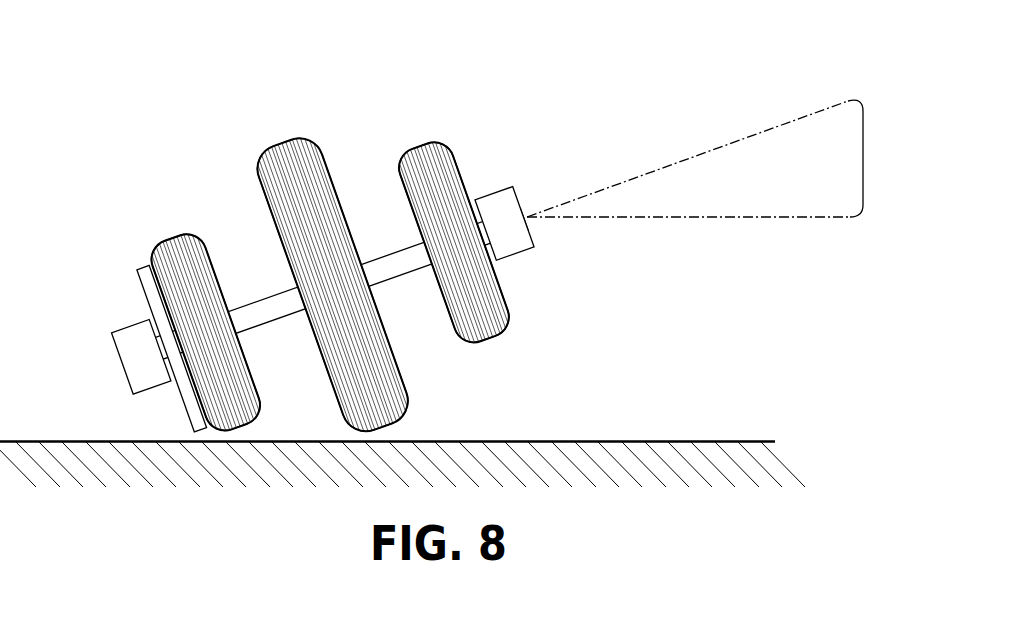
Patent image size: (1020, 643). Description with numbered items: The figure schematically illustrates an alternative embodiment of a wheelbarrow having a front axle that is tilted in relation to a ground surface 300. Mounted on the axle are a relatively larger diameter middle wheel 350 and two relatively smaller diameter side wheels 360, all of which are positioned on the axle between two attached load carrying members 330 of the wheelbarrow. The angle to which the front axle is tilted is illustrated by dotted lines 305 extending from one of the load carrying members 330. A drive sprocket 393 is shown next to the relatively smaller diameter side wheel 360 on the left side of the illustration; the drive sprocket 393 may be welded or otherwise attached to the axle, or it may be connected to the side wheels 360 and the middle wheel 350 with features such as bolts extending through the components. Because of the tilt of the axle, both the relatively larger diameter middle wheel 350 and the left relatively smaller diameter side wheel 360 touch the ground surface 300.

The ground surface 300 is at (638, 442).
The dotted lines 305 is at (865, 151).
The load carrying members 330 is at (121, 332).
The relatively larger diameter middle wheel 350 is at (287, 172).
The relatively smaller diameter side wheels 360 is at (173, 246).
The drive sprocket 393 is at (141, 268).